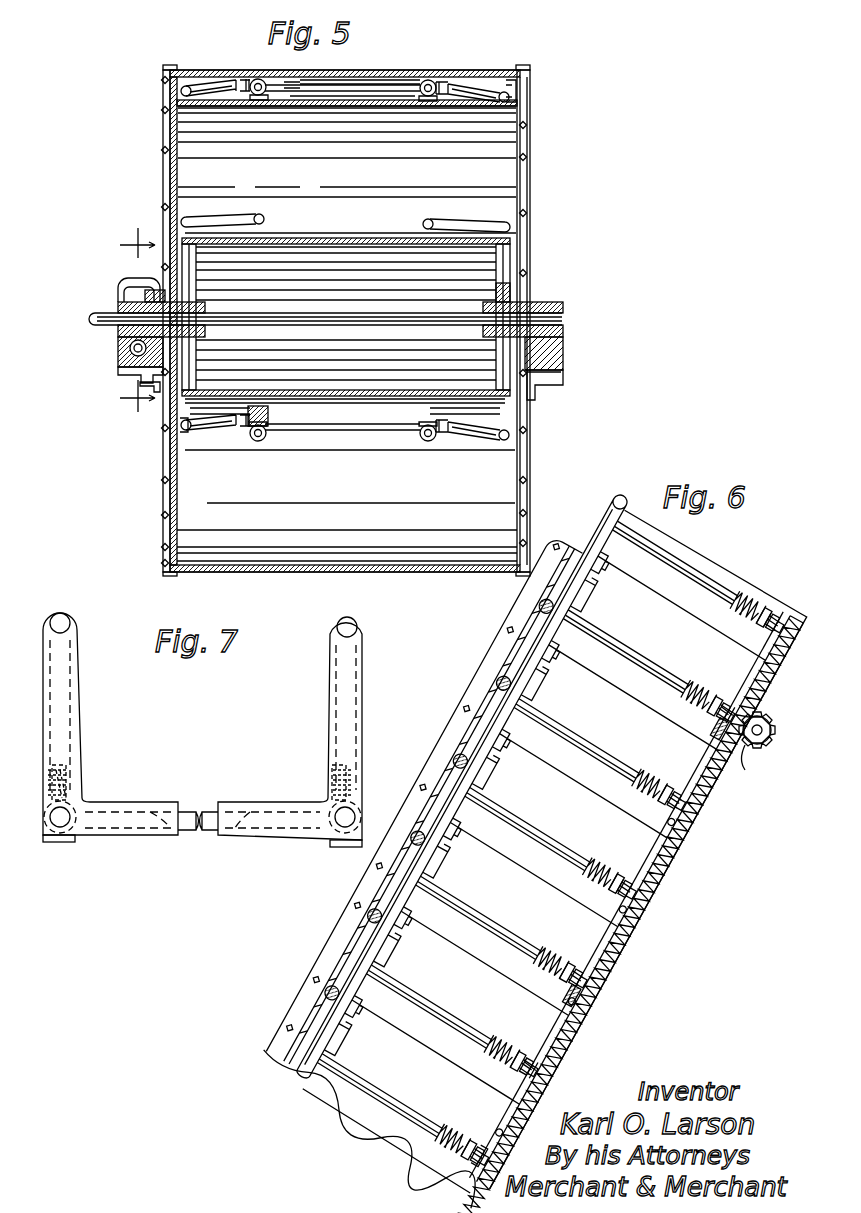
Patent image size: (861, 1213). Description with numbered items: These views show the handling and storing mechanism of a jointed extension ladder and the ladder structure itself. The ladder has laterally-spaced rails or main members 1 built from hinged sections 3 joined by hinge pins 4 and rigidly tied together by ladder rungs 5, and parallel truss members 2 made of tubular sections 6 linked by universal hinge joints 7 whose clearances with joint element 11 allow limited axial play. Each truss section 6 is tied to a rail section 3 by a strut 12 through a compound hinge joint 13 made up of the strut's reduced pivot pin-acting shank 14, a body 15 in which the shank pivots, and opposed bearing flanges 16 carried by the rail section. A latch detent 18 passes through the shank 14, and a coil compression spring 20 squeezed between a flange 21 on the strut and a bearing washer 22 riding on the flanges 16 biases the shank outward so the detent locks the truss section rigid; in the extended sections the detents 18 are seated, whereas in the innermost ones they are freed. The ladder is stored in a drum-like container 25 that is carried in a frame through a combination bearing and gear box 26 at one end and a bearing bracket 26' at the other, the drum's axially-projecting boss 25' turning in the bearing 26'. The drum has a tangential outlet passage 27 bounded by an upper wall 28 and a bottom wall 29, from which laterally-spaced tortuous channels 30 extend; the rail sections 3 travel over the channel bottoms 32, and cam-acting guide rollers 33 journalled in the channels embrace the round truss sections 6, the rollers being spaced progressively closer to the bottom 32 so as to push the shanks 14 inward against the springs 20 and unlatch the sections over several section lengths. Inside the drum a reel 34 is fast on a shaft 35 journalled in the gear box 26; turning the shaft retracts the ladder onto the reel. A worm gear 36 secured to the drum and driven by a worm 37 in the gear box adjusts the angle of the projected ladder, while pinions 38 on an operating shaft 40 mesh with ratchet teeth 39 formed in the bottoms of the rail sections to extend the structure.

In FIG. 5, the rails 1 is at (439, 78).
In FIG. 6, the rails 1 is at (661, 829).
In FIG. 5, the truss members 2 is at (524, 95).
In FIG. 6, the truss members 2 is at (601, 513).
In FIG. 6, the sections 3 is at (645, 868).
In FIG. 6, the hinge pins 4 is at (706, 760).
In FIG. 5, the ladder rungs 5 is at (368, 85).
In FIG. 7, the ladder rungs 5 is at (208, 832).
In FIG. 5, the sections 6 is at (187, 86).
In FIG. 6, the sections 6 is at (605, 555).
In FIG. 6, the universal hinge joints 7 is at (600, 578).
In FIG. 5, the joint element 11 is at (137, 330).
In FIG. 5, the struts 12 is at (215, 87).
In FIG. 7, the struts 12 is at (72, 704).
In FIG. 6, the struts 12 is at (688, 566).
In FIG. 5, the compound pivot or hinge joints 13 is at (262, 80).
In FIG. 6, the compound pivot or hinge joints 13 is at (647, 898).
In FIG. 6, the pivot pin-acting shanks 14 is at (766, 618).
In FIG. 6, the body 15 is at (706, 712).
In FIG. 6, the bearing flanges 16 is at (718, 700).
In FIG. 6, the latch detent 18 is at (484, 1142).
In FIG. 7, the coil compression springs 20 is at (76, 780).
In FIG. 6, the coil compression springs 20 is at (750, 606).
In FIG. 7, the flanges 21 is at (72, 768).
In FIG. 6, the flanges 21 is at (740, 598).
In FIG. 7, the bearing washers 22 is at (75, 800).
In FIG. 6, the bearing washers 22 is at (748, 632).
In FIG. 5, the drum-like container 25 is at (377, 330).
In FIG. 5, the axially-projecting boss 25' is at (570, 359).
In FIG. 5, the combination bearing and gear box 26 is at (143, 304).
In FIG. 5, the bearing bracket 26' is at (549, 310).
In FIG. 5, the tangential outlet passage 27 is at (333, 74).
In FIG. 5, the upper wall 28 is at (402, 74).
In FIG. 5, the bottom wall 29 is at (218, 100).
In FIG. 6, the tortuous channels 30 is at (455, 699).
In FIG. 6, the bottoms 32 is at (668, 848).
In FIG. 6, the cam-acting guide rollers 33 is at (540, 608).
In FIG. 5, the reel 34 is at (333, 238).
In FIG. 5, the shaft 35 is at (100, 319).
In FIG. 5, the worm gear 36 is at (128, 347).
In FIG. 5, the worm 37 is at (140, 372).
In FIG. 6, the pinions 38 is at (762, 720).
In FIG. 5, the ratchet 39 is at (270, 411).
In FIG. 7, the ratchet 39 is at (60, 843).
In FIG. 6, the ratchet 39 is at (715, 806).
In FIG. 6, the operating shaft 40 is at (748, 755).